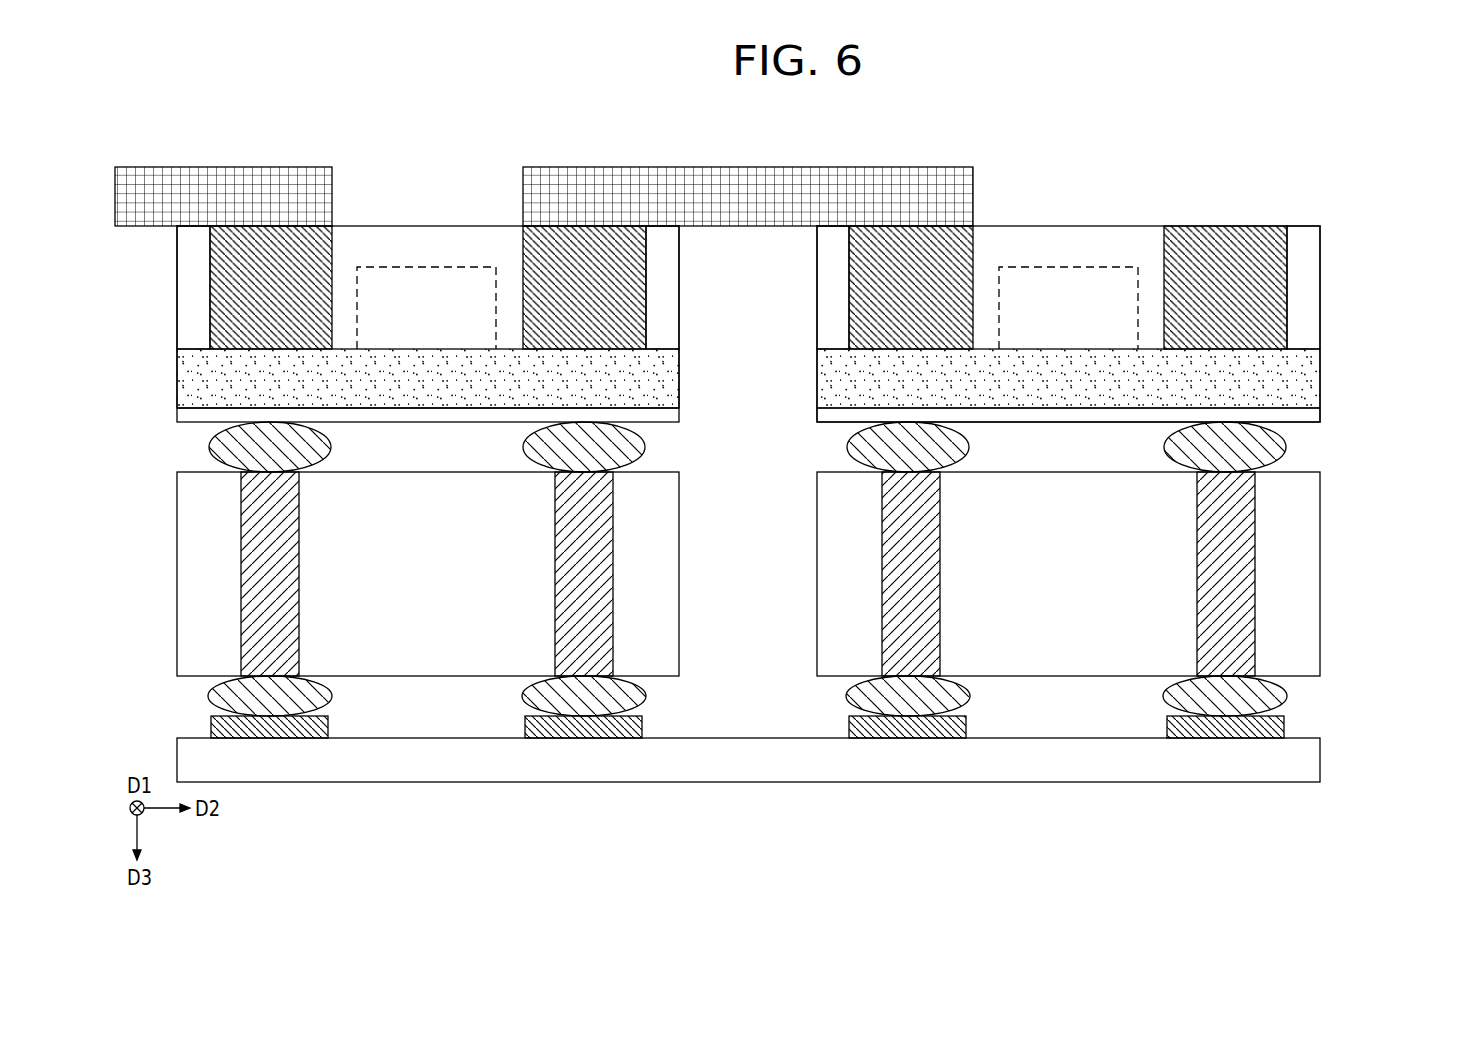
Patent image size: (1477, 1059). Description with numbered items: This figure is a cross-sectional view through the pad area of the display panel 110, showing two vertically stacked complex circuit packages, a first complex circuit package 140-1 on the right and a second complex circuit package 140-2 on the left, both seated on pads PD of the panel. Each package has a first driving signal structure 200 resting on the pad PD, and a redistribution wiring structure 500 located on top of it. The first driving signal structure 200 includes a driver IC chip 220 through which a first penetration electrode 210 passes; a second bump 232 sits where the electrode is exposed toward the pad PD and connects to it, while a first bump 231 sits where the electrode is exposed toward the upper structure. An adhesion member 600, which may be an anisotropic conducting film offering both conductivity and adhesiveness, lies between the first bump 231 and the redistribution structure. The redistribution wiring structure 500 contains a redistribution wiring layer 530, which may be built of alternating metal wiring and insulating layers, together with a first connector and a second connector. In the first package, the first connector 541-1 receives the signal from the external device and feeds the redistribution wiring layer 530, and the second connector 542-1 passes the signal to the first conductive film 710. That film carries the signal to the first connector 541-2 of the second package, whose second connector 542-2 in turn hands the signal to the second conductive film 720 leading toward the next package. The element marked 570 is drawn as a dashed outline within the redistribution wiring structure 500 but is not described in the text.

The display panel 110 is at (1318, 765).
The first complex circuit package 140-1 is at (1106, 412).
The second complex circuit package 140-2 is at (433, 407).
The first driving signal structure 200 is at (1133, 569).
The first penetration electrode 210 is at (1255, 582).
The driver IC chip 220 is at (1318, 530).
The first bump 231 is at (1280, 444).
The second bump 232 is at (1116, 696).
The pad PD is at (1283, 727).
The redistribution wiring structure 500 is at (1106, 336).
The redistribution wiring layer 530 is at (1318, 372).
The first connector 541-1 is at (1285, 305).
The first connector 541-2 is at (640, 262).
The second connector 542-1 is at (970, 258).
The second connector 542-2 is at (210, 304).
The cavity / embedded element 570 is at (1000, 305).
The adhesion member 600 is at (840, 422).
The first conductive film 710 is at (797, 168).
The second conductive film 720 is at (207, 178).